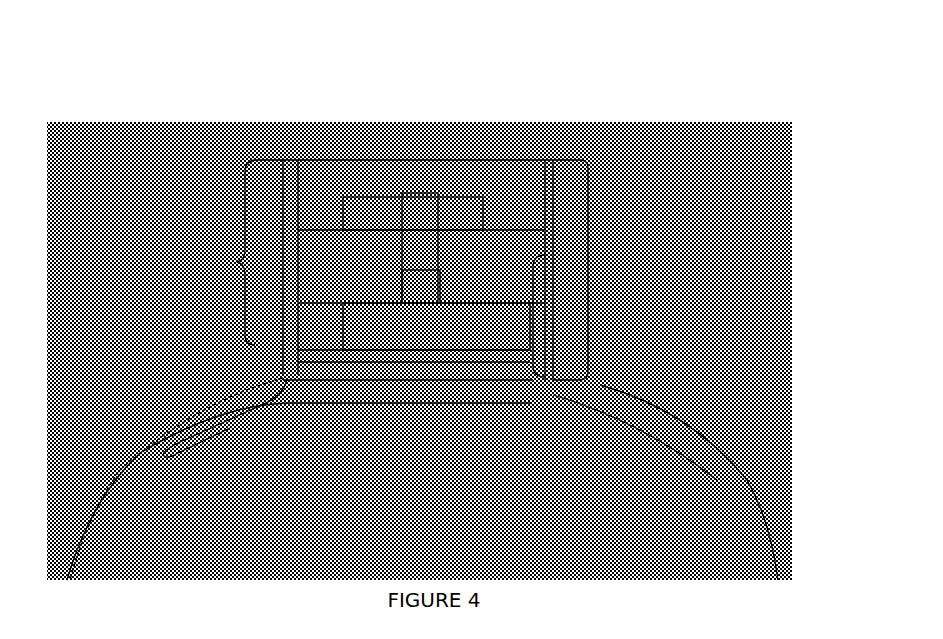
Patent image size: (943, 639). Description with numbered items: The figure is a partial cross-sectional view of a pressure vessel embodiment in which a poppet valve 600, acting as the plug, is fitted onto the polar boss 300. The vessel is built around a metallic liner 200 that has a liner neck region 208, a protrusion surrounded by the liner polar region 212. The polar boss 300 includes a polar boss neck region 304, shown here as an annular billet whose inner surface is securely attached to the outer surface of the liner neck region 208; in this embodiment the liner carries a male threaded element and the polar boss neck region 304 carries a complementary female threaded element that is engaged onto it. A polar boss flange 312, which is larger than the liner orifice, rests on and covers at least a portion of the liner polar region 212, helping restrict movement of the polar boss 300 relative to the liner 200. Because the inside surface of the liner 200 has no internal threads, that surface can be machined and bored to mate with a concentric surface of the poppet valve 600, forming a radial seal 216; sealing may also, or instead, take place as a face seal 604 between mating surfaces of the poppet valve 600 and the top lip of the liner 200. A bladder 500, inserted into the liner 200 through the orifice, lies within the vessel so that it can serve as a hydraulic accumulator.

The metallic liner 200 is at (728, 458).
The liner neck region 208 is at (518, 323).
The liner polar region 212 is at (230, 422).
The radial seal 216 is at (525, 345).
The polar boss 300 is at (590, 199).
The polar boss neck region 304 is at (222, 258).
The polar boss flange 312 is at (228, 378).
The bladder 500 is at (600, 460).
The poppet valve 600 is at (412, 324).
The face seal 604 is at (292, 242).